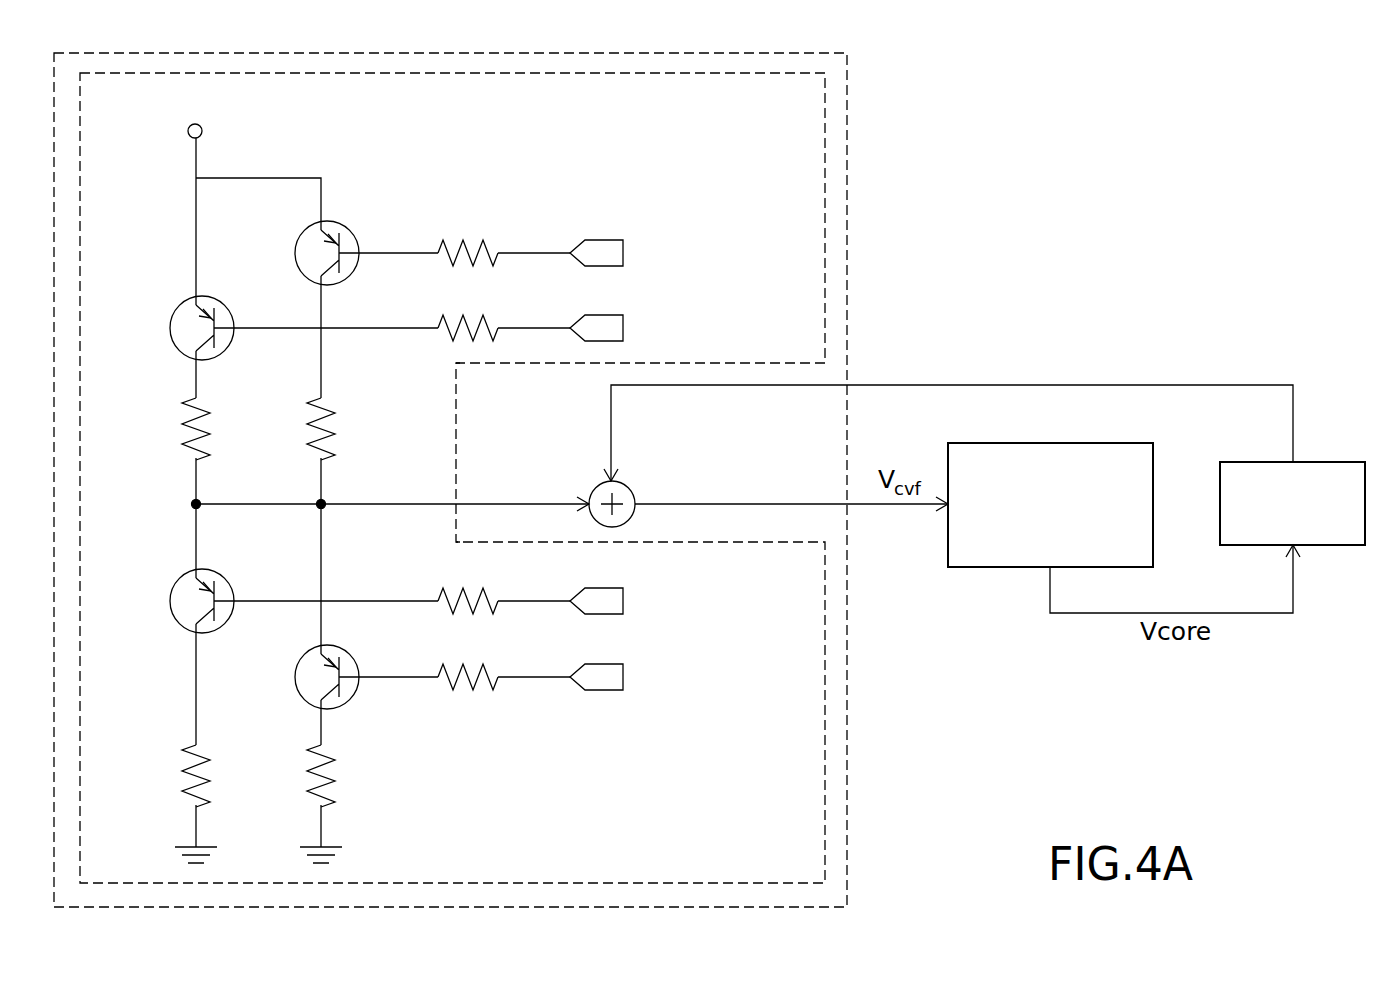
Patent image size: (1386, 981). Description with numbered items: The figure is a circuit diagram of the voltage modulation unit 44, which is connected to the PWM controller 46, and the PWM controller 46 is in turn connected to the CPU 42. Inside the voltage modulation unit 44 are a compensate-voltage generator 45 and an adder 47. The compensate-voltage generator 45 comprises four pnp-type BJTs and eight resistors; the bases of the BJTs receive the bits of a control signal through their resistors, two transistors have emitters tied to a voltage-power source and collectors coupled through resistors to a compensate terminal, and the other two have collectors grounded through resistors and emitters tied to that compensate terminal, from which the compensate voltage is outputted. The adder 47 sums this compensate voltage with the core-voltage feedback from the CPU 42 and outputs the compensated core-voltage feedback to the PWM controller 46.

The CPU 42 is at (1310, 475).
The voltage modulation unit 44 is at (838, 290).
The compensate-voltage generator 45 is at (744, 443).
The PWM controller 46 is at (1098, 455).
The adder 47 is at (628, 487).